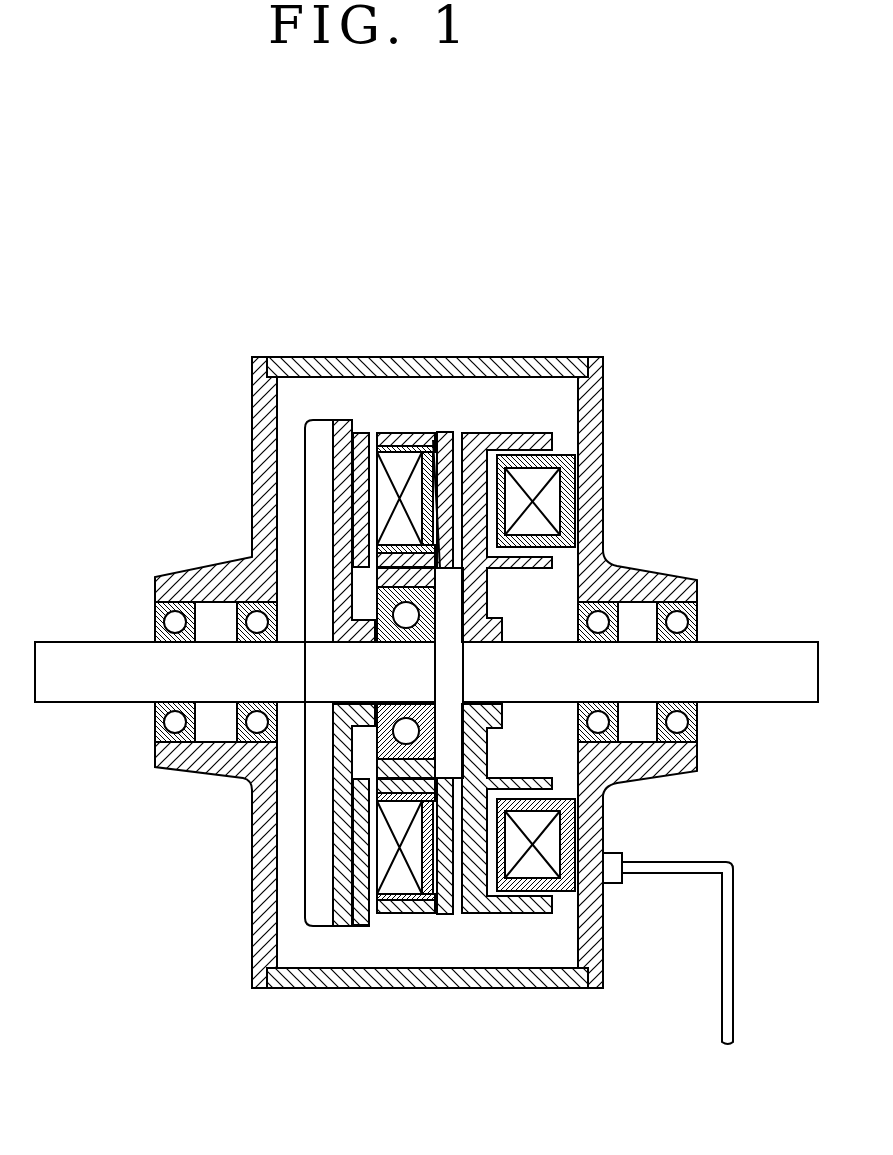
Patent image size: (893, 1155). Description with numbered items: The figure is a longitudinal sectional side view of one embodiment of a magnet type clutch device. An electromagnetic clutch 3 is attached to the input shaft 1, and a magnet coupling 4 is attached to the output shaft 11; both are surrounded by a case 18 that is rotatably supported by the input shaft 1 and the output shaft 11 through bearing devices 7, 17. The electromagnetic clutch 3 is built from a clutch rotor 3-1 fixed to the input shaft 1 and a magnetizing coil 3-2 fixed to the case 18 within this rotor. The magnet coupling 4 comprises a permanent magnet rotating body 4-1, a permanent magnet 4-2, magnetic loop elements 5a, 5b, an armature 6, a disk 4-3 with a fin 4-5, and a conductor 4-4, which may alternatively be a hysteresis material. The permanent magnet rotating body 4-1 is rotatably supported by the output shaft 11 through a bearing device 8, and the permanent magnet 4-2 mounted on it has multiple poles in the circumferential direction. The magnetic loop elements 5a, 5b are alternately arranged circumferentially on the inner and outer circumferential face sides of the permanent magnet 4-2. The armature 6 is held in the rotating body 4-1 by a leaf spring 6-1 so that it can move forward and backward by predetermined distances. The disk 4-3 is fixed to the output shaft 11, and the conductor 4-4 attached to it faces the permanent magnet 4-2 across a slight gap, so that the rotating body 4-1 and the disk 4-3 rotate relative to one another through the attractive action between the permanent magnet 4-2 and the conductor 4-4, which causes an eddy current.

The input shaft 1 is at (760, 655).
The output shaft 11 is at (66, 656).
The electromagnetic clutch 3 is at (518, 418).
The clutch rotor 3-1 is at (477, 433).
The magnetizing coil 3-2 is at (555, 493).
The magnet coupling 4 is at (373, 412).
The permanent magnet rotating body 4-1 is at (408, 432).
The permanent magnet 4-2 is at (390, 497).
The disk 4-3 is at (345, 420).
The conductor 4-4 is at (355, 875).
The fin 4-5 is at (315, 427).
The magnetic loop element 5a is at (378, 556).
The magnetic loop element 5b is at (372, 442).
The armature 6 is at (450, 432).
The leaf spring 6-1 is at (440, 512).
The bearing device 7 is at (700, 612).
The bearing device 8 is at (352, 600).
The bearing device 17 is at (148, 612).
The case 18 is at (600, 388).